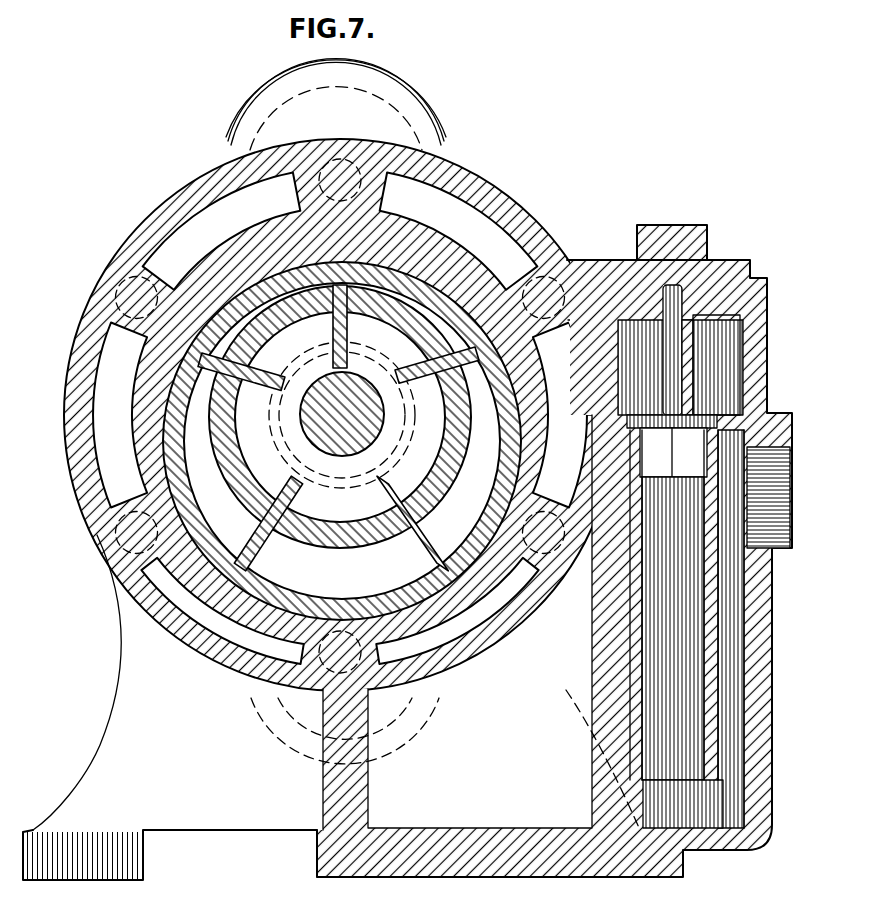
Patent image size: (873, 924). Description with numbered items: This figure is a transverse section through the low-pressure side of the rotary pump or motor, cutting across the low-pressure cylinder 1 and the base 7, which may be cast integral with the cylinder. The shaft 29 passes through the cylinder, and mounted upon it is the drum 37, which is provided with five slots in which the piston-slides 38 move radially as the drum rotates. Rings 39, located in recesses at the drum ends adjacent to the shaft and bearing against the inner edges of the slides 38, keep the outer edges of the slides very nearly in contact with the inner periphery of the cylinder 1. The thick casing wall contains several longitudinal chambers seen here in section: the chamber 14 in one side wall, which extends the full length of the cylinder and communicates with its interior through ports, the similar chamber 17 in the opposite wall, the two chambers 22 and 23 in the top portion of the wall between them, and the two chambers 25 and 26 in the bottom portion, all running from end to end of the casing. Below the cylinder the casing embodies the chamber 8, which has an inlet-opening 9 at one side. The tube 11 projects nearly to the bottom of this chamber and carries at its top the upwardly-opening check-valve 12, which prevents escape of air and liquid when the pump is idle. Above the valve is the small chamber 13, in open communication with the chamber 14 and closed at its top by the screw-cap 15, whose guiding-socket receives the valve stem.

The low-pressure cylinder 1 is at (324, 444).
The base 7 is at (407, 581).
The chamber 8 is at (445, 760).
The inlet-opening 9 is at (768, 497).
The tube 11 is at (687, 629).
The check-valve 12 is at (672, 446).
The small chamber 13 is at (680, 350).
The chamber 14 is at (575, 414).
The screw-cap 15 is at (710, 243).
The chamber 17 is at (120, 415).
The chamber 22 is at (222, 231).
The chamber 23 is at (459, 231).
The chamber 25 is at (457, 611).
The chamber 26 is at (222, 611).
The shaft 29 is at (342, 414).
The drum 37 is at (340, 429).
The piston-slides 38 is at (338, 428).
The rings 39 is at (342, 415).